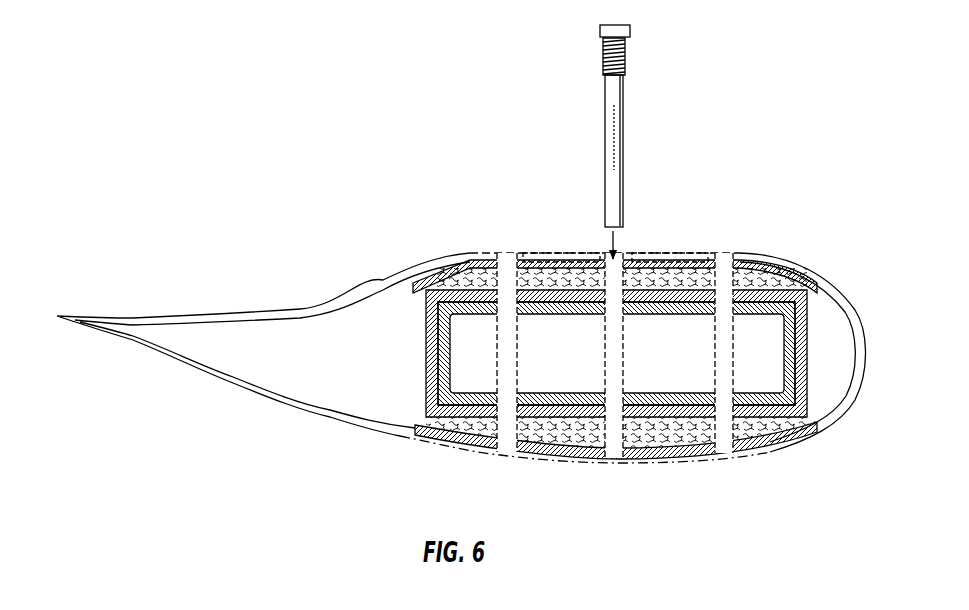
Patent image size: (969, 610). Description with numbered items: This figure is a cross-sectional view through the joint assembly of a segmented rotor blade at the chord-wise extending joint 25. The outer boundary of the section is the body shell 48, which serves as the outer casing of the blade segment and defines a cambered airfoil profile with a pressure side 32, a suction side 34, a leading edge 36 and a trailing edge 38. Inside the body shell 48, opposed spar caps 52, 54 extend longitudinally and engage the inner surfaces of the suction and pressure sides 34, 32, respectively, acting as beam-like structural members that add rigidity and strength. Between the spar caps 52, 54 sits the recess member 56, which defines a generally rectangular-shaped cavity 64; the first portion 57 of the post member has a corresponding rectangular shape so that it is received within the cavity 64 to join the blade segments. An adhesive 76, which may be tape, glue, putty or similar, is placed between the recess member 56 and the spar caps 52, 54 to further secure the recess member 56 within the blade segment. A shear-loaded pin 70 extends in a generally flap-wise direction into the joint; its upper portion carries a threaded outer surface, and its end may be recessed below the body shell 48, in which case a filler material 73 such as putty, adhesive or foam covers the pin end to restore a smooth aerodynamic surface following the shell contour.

The chord-wise extending joint 25 is at (356, 240).
The pressure side 32 is at (782, 448).
The suction side 34 is at (470, 256).
The leading edge 36 is at (868, 350).
The trailing edge 38 is at (58, 320).
The body shell 48 is at (312, 300).
The spar cap 52 is at (794, 263).
The spar cap 54 is at (685, 453).
The recess member 56 is at (748, 420).
The first portion of the post member 57 is at (483, 407).
The cavity 64 is at (680, 364).
The shear-loaded pin 70 is at (604, 115).
The filler material 73 is at (622, 25).
The adhesive 76 is at (668, 262).